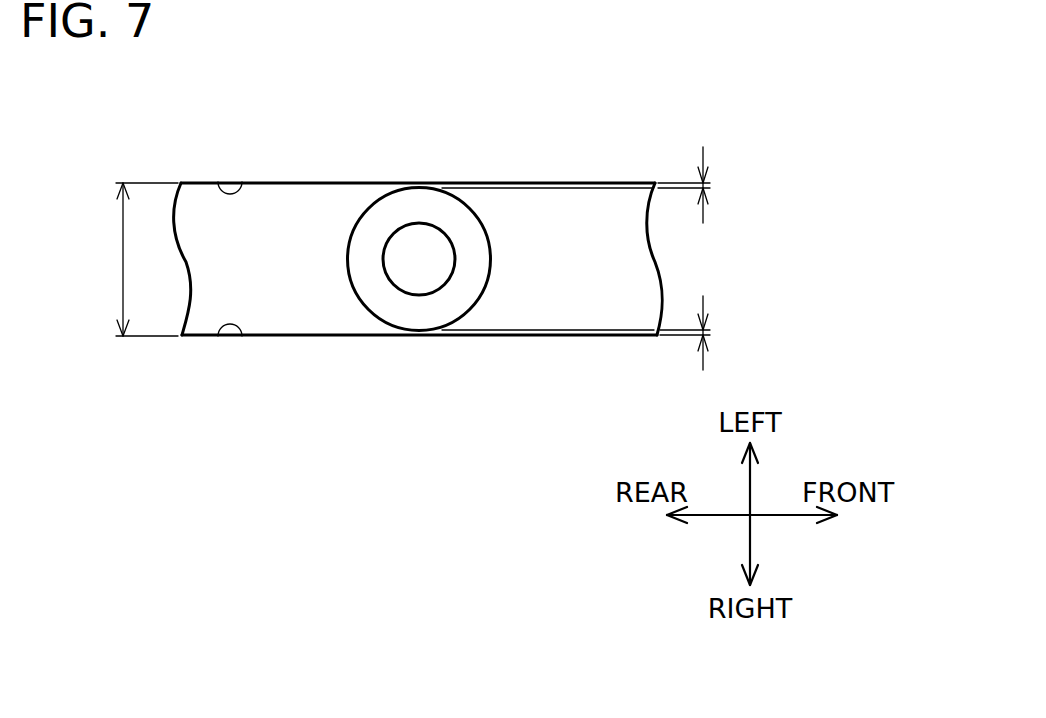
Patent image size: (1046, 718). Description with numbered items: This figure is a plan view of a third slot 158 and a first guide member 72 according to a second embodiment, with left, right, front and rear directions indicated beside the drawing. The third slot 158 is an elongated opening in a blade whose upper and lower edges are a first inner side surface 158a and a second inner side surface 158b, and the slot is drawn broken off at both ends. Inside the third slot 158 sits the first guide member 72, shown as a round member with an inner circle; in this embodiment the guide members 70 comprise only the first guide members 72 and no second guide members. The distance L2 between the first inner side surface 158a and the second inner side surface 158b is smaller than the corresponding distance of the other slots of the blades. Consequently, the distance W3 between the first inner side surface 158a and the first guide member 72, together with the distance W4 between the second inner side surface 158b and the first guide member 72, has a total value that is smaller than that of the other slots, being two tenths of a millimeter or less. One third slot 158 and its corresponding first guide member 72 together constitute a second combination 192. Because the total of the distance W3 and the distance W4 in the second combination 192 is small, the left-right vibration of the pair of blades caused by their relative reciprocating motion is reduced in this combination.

The third slot 158 is at (183, 158).
The first inner side surface 158a is at (218, 182).
The second inner side surface 158b is at (218, 336).
The second combination 192 is at (418, 172).
The first guide member 72 is at (387, 213).
The guide member 70 is at (380, 226).
The distance L2 is at (132, 259).
The distance W3 is at (704, 185).
The distance W4 is at (705, 333).